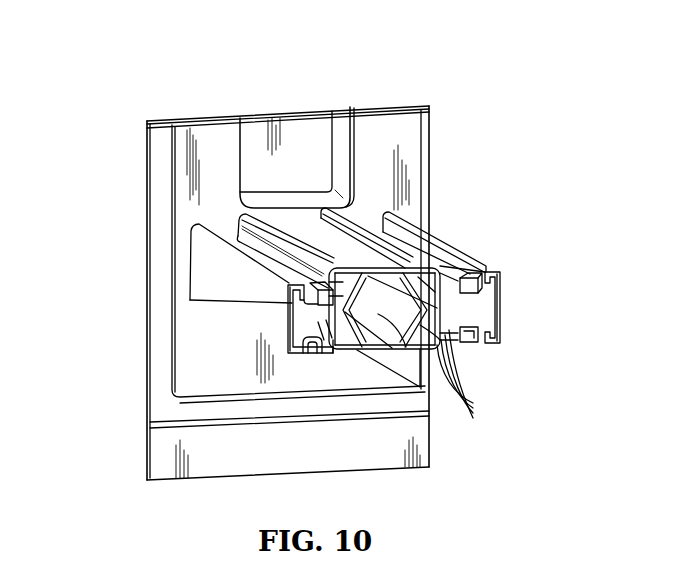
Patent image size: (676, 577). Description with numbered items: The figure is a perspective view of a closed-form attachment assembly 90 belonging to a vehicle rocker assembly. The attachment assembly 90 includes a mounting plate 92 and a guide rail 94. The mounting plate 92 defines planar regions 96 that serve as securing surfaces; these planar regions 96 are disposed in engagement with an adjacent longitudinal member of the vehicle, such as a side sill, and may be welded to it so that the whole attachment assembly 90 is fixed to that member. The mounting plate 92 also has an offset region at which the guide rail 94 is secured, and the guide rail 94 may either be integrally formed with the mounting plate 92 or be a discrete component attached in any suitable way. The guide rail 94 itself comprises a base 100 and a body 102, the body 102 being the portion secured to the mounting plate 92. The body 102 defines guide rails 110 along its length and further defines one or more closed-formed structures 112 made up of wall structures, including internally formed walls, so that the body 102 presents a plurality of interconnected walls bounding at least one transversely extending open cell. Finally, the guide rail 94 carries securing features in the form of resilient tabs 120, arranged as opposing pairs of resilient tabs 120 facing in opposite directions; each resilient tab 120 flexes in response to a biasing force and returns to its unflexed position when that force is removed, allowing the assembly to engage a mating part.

The attachment assembly 90 is at (124, 72).
The mounting plate 92 is at (207, 122).
The guide rail 94 is at (438, 248).
The planar region 96 is at (300, 134).
The base 100 is at (406, 131).
The body 102 is at (498, 270).
The guide rails 110 is at (288, 323).
The closed-formed structure 112 is at (418, 344).
The resilient tab 120 is at (288, 353).